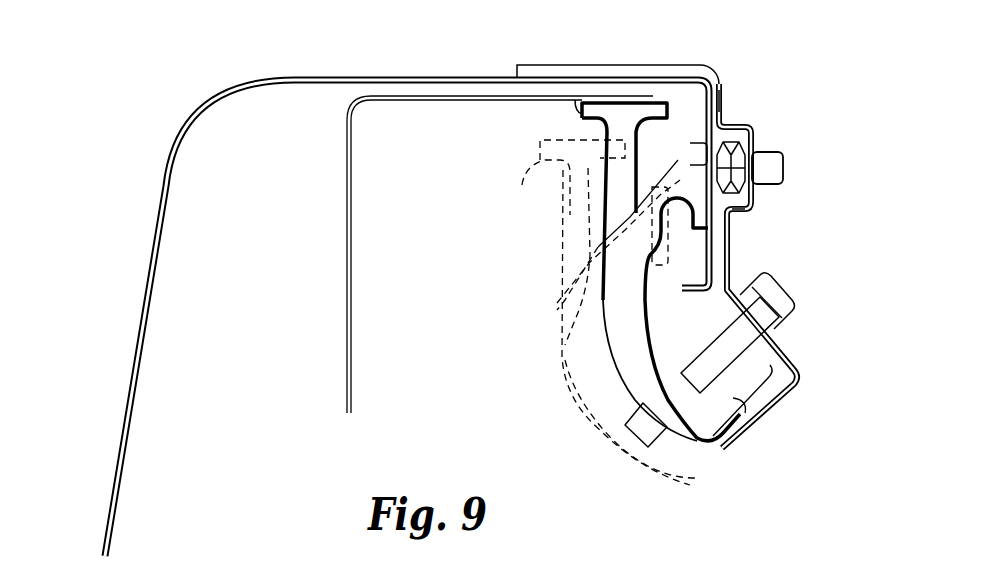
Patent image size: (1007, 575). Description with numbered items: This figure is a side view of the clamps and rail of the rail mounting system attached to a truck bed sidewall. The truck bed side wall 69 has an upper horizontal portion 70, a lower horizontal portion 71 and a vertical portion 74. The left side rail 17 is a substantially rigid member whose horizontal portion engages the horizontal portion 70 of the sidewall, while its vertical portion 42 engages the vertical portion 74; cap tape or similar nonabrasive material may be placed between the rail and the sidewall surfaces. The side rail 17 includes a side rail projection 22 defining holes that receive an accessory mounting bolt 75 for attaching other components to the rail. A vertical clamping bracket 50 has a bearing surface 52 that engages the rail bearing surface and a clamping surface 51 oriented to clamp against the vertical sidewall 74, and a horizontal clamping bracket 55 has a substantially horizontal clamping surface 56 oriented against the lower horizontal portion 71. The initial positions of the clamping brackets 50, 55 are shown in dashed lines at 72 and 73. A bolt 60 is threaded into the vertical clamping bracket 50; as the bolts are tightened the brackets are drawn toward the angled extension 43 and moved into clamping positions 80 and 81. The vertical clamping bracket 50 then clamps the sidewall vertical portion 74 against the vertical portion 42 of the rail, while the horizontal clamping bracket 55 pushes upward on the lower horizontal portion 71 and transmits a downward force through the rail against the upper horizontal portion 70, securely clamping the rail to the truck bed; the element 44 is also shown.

The left side rail 17 is at (626, 65).
The side rail projection 22 is at (743, 128).
The vertical portion 42 is at (728, 247).
The angled extension 43 is at (757, 295).
The clip return leg 44 is at (766, 406).
The vertical clamping bracket 50 is at (557, 368).
The clamping surface 51 is at (727, 220).
The bearing surface 52 is at (733, 437).
The horizontal clamping bracket 55 is at (568, 211).
The clamping surface 56 is at (660, 106).
The bolt 60 is at (780, 305).
The side wall 69 is at (120, 354).
The horizontal portion 70 is at (292, 77).
The horizontal portion 71 is at (430, 100).
The initial position 72 is at (570, 302).
The initial position 73 is at (525, 170).
The vertical portion 74 is at (722, 106).
The accessory mounting bolt 75 is at (772, 155).
The clamping position 80 is at (675, 175).
The clamping position 81 is at (574, 114).